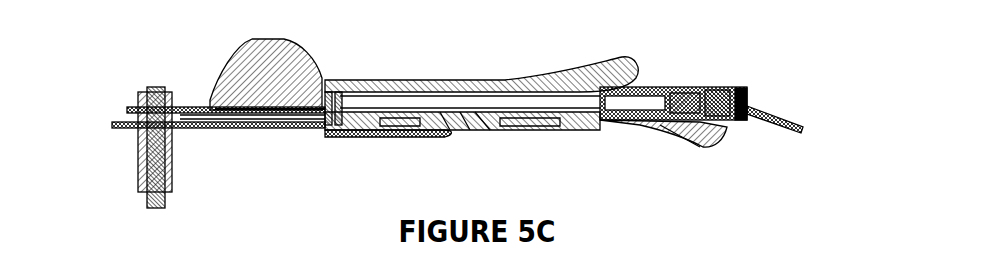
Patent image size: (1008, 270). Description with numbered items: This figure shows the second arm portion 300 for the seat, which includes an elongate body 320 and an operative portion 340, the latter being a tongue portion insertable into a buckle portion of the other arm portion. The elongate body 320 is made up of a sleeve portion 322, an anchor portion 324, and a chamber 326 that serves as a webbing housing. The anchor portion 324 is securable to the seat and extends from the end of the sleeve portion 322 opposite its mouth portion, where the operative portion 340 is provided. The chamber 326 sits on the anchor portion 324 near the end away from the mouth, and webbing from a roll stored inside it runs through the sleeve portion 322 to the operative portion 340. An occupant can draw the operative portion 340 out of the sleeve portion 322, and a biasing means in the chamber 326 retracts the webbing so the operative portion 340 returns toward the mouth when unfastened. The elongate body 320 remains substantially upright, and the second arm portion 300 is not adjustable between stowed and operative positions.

The second arm portion 300 is at (130, 63).
The elongate body 320 is at (447, 128).
The sleeve portion 322 is at (572, 103).
The anchor portion 324 is at (145, 130).
The chamber 326 is at (278, 105).
The operative portion 340 is at (745, 88).